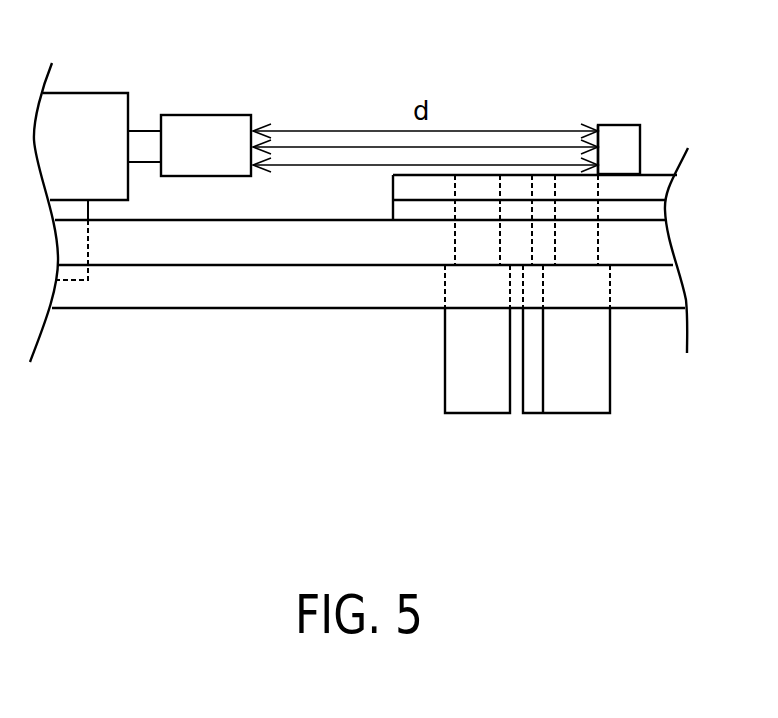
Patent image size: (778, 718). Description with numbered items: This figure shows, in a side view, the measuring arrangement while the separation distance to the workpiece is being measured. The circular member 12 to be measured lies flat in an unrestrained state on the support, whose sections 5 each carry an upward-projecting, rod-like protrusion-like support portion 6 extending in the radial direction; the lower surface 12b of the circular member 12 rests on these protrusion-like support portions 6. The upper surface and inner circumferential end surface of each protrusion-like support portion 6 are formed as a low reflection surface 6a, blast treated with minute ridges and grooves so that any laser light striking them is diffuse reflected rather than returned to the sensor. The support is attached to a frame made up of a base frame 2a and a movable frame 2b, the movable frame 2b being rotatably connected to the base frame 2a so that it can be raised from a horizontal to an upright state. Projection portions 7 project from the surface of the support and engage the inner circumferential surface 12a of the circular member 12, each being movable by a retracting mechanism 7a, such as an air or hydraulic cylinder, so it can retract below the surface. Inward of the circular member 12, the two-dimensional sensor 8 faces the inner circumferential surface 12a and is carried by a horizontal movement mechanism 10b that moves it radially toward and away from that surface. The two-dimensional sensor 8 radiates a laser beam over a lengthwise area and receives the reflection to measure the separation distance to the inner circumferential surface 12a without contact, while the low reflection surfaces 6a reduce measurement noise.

The base frame 2a is at (160, 297).
The movable frame 2b is at (253, 255).
The section 5 is at (422, 212).
The protrusion-like support portion 6 is at (653, 183).
The low reflection surface 6a is at (472, 175).
The projection portion 7 is at (465, 255).
The retracting mechanism 7a is at (453, 353).
The two-dimensional sensor 8 is at (205, 130).
The horizontal movement mechanism 10b is at (87, 108).
The circular member 12 is at (639, 110).
The inner circumferential surface 12a is at (600, 143).
The lower surface 12b is at (618, 177).